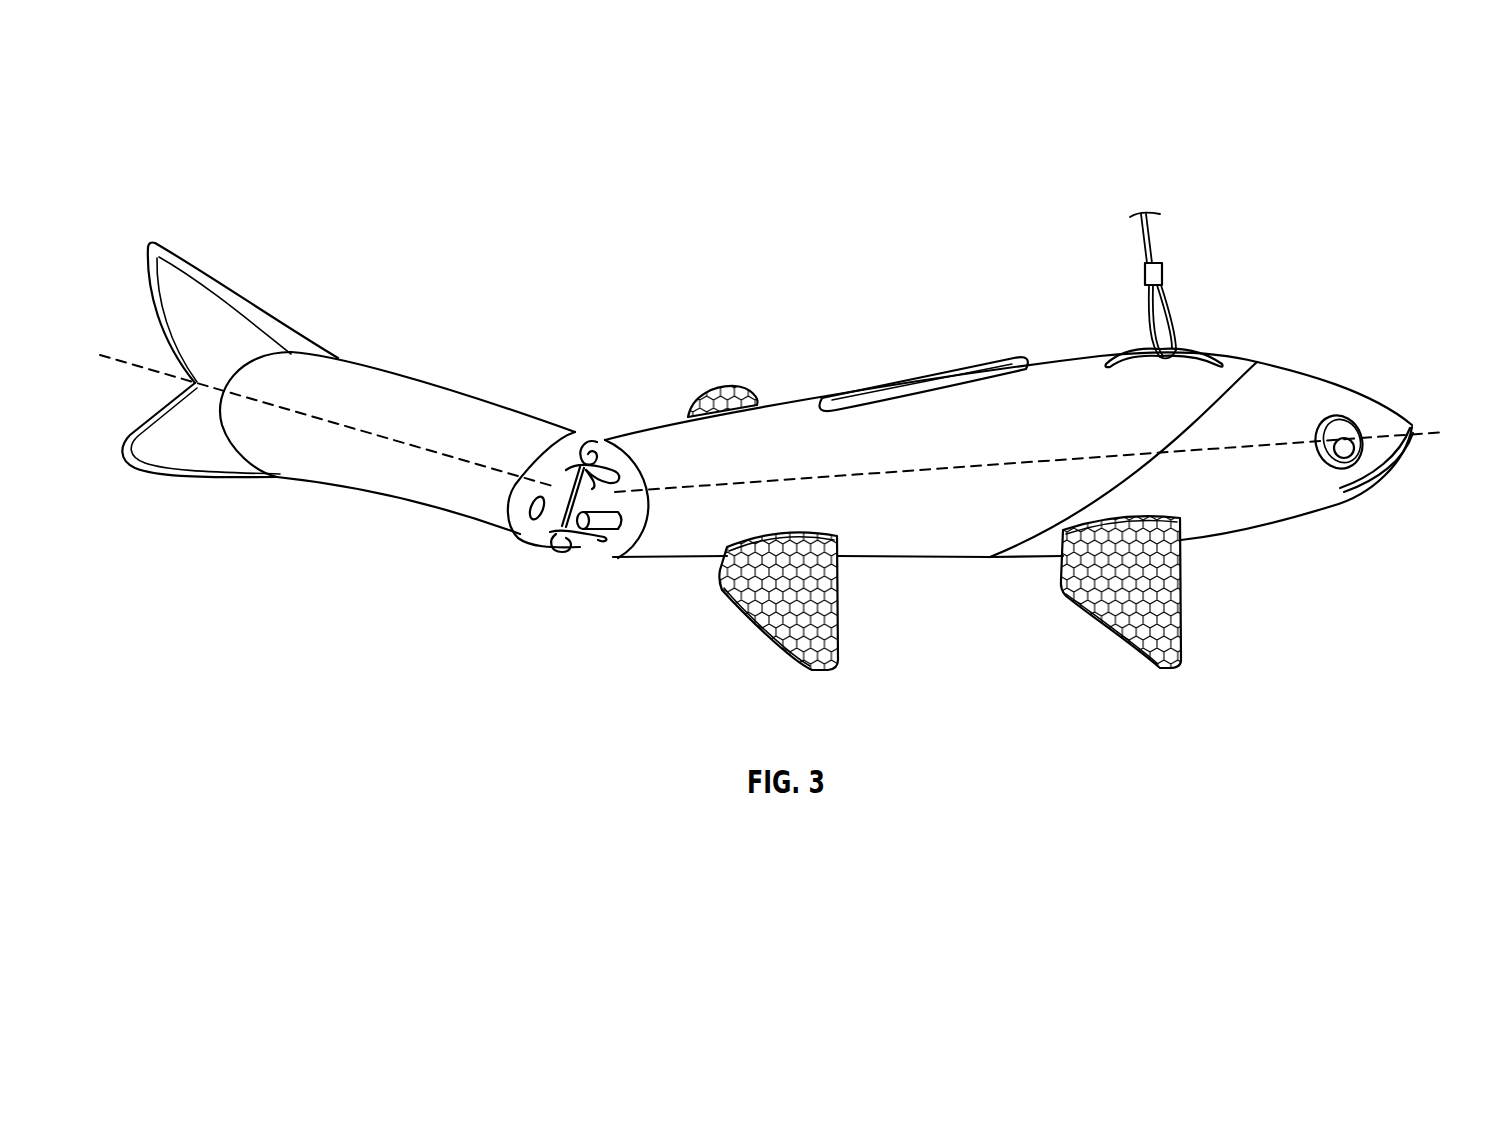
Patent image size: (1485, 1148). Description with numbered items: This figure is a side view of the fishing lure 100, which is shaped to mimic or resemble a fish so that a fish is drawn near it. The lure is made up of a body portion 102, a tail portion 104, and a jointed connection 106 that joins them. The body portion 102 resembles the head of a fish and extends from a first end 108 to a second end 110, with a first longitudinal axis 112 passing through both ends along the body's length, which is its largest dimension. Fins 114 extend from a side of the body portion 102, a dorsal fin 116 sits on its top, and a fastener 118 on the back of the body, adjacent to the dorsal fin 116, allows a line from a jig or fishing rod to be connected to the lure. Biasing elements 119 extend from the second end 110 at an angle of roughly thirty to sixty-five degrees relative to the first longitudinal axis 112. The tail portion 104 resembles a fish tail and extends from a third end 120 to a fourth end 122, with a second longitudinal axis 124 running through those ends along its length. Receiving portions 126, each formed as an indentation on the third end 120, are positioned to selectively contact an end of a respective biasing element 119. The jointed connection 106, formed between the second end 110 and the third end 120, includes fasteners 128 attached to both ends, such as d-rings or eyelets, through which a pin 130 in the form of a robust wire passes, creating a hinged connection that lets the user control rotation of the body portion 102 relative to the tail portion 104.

The fishing lure 100 is at (1306, 318).
The body portion 102 is at (1249, 526).
The tail portion 104 is at (403, 487).
The jointed connection 106 is at (566, 578).
The first end 108 is at (1408, 415).
The second end 110 is at (598, 442).
The first longitudinal axis 112 is at (1437, 433).
The fins 114 is at (736, 393).
The dorsal fin 116 is at (968, 373).
The fastener 118 is at (1190, 348).
The biasing elements 119 is at (608, 526).
The third end 120 is at (558, 532).
The fourth end 122 is at (200, 480).
The second longitudinal axis 124 is at (133, 364).
The receiving portion 126 is at (535, 522).
The fasteners 128 is at (575, 548).
The pin 130 is at (588, 440).